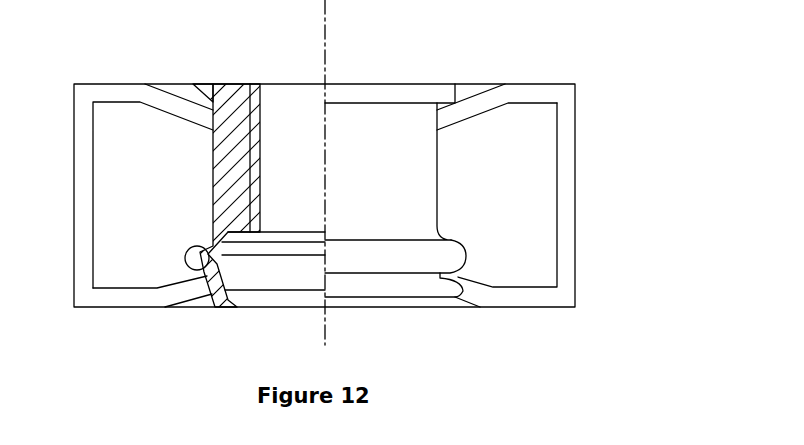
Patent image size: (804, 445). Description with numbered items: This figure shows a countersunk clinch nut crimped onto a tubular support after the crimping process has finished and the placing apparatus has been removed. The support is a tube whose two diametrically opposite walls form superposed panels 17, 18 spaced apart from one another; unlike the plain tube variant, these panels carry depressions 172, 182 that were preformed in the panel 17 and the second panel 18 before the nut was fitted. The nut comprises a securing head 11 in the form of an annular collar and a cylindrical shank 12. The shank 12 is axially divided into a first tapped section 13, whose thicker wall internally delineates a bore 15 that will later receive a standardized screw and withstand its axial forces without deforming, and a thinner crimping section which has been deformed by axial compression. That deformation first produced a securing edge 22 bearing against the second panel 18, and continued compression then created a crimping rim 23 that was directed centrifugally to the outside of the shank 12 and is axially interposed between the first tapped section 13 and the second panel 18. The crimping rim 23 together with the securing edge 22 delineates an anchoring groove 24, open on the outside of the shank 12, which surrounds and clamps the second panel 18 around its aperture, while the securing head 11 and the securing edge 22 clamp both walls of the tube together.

The securing head 11 is at (388, 90).
The shank 12 is at (418, 180).
The first tapped section 13 is at (223, 178).
The bore 15 is at (258, 142).
The panel 17 is at (122, 90).
The depression 172 is at (168, 105).
The second panel 18 is at (122, 300).
The depression 182 is at (462, 300).
The securing edge 22 is at (392, 300).
The crimping rim 23 is at (438, 260).
The anchoring groove 24 is at (417, 284).